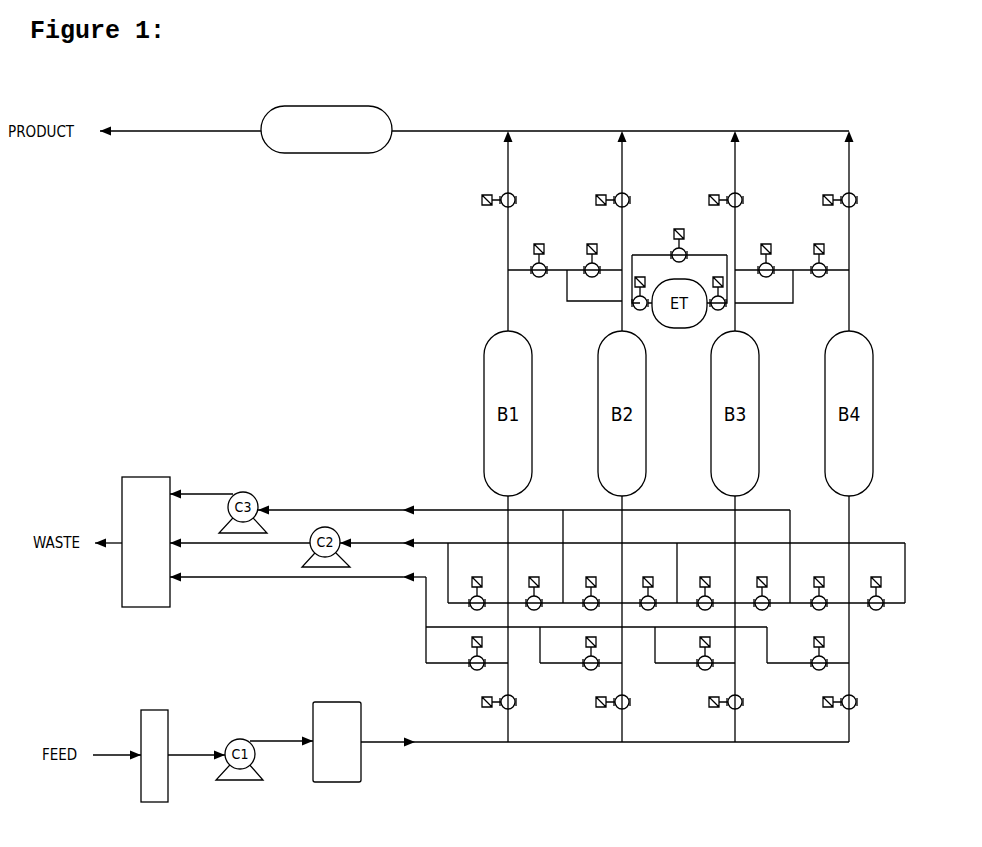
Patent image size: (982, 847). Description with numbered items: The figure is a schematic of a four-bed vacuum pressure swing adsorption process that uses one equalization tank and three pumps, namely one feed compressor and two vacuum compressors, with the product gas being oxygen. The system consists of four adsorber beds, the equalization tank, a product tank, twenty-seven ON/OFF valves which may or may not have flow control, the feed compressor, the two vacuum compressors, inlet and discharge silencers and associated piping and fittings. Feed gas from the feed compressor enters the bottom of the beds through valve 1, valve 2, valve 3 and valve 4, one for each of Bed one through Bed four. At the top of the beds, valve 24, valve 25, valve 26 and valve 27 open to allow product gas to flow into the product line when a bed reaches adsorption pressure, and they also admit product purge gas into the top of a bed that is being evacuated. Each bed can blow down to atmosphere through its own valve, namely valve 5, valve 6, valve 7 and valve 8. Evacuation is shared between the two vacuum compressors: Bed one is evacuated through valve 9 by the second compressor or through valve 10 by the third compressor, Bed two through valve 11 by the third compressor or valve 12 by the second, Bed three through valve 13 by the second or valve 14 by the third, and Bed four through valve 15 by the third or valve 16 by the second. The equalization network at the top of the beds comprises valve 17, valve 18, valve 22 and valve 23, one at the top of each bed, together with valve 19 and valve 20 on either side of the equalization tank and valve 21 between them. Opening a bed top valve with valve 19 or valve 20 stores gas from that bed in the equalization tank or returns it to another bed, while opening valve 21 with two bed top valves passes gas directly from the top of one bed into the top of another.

The valve 1 is at (504, 702).
The valve 2 is at (618, 702).
The valve 3 is at (731, 702).
The valve 4 is at (845, 702).
The valve 5 is at (477, 661).
The valve 6 is at (591, 661).
The valve 7 is at (705, 661).
The valve 8 is at (819, 661).
The valve 9 is at (477, 601).
The valve 10 is at (534, 601).
The valve 11 is at (591, 601).
The valve 12 is at (648, 601).
The valve 13 is at (705, 601).
The valve 14 is at (762, 601).
The valve 15 is at (819, 601).
The valve 16 is at (876, 601).
The valve 17 is at (539, 268).
The valve 18 is at (592, 268).
The valve 19 is at (640, 301).
The valve 20 is at (718, 301).
The valve 21 is at (679, 253).
The valve 22 is at (766, 268).
The valve 23 is at (819, 268).
The valve 24 is at (507, 200).
The valve 25 is at (621, 200).
The valve 26 is at (734, 200).
The valve 27 is at (848, 200).